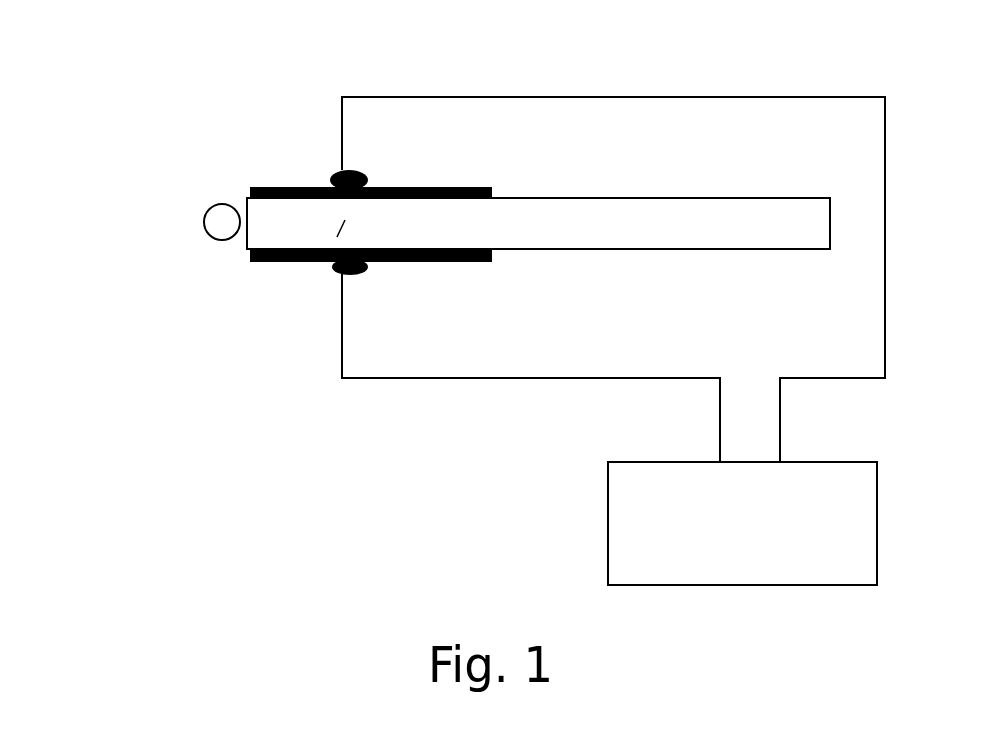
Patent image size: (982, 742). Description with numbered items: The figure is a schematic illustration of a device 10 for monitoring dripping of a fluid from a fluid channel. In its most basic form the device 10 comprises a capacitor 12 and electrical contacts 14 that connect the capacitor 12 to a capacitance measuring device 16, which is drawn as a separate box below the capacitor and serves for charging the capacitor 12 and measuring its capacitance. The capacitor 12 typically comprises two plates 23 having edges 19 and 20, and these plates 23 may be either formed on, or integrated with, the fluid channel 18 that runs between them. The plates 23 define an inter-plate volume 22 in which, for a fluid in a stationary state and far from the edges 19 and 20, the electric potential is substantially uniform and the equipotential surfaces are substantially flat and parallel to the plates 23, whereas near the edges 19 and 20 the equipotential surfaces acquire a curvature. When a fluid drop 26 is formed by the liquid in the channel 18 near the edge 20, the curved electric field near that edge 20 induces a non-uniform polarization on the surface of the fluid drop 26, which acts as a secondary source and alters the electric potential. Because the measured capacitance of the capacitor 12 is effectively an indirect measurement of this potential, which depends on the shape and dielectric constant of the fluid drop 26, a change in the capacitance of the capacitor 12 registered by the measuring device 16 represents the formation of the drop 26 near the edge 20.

The device 10 is at (218, 82).
The capacitor 12 is at (470, 152).
The electrical contacts 14 is at (334, 275).
The capacitance measuring device 16 is at (742, 523).
The fluid channel 18 is at (537, 225).
The edge 19 is at (645, 223).
The edge 20 is at (263, 223).
The inter-plate volume 22 is at (322, 263).
The plates 23 is at (305, 187).
The fluid drop 26 is at (220, 216).